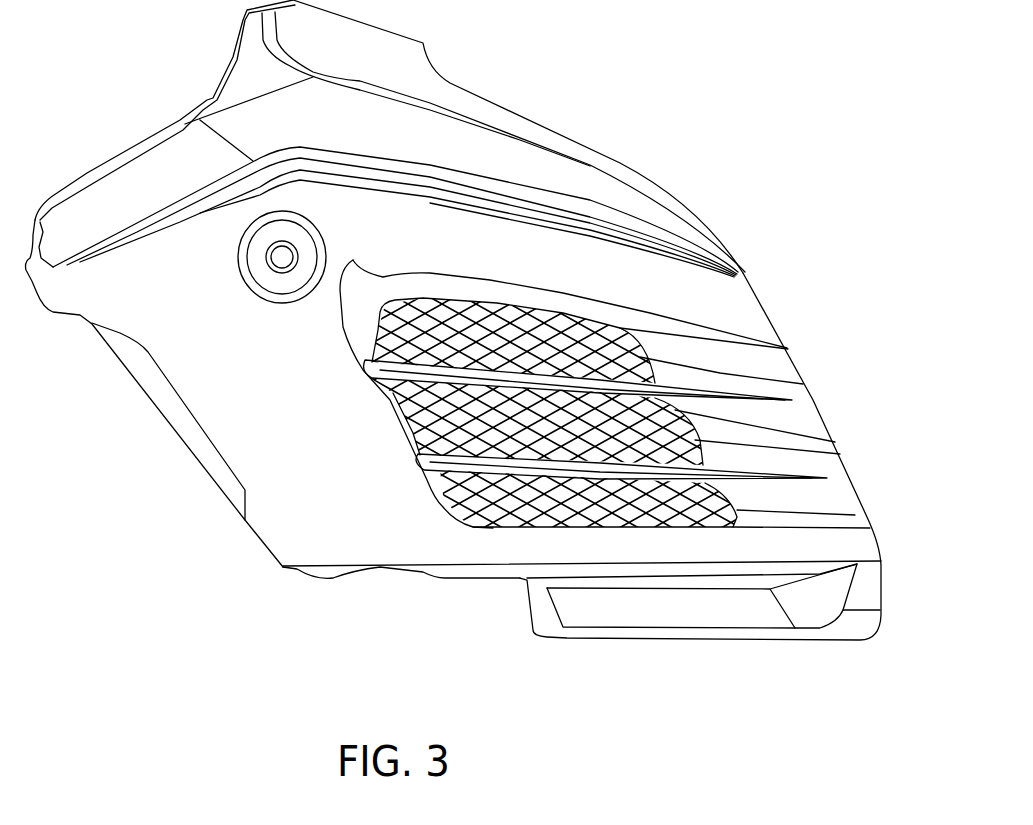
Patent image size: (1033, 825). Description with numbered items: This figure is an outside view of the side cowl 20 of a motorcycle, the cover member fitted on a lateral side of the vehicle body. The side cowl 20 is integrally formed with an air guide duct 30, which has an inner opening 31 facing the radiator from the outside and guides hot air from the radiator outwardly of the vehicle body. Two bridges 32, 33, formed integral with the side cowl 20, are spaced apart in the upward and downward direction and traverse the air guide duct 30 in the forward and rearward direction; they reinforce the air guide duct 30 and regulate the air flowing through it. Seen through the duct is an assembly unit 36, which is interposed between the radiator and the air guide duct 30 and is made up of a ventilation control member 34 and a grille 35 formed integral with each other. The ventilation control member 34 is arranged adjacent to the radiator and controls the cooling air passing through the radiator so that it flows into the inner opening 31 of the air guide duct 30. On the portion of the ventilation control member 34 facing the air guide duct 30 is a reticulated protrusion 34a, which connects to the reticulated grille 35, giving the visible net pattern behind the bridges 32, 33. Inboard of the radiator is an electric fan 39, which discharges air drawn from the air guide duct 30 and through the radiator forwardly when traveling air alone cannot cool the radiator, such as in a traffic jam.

The side cowl 20 is at (297, 528).
The air guide duct 30 is at (473, 277).
The inner opening 31 is at (603, 390).
The bridge 32 is at (607, 350).
The bridge 33 is at (507, 462).
The ventilation control member 34 is at (717, 503).
The reticulated protrusion 34a is at (723, 520).
The grille 35 is at (423, 420).
The assembly unit 36 is at (533, 307).
The electric fan 39 is at (363, 303).